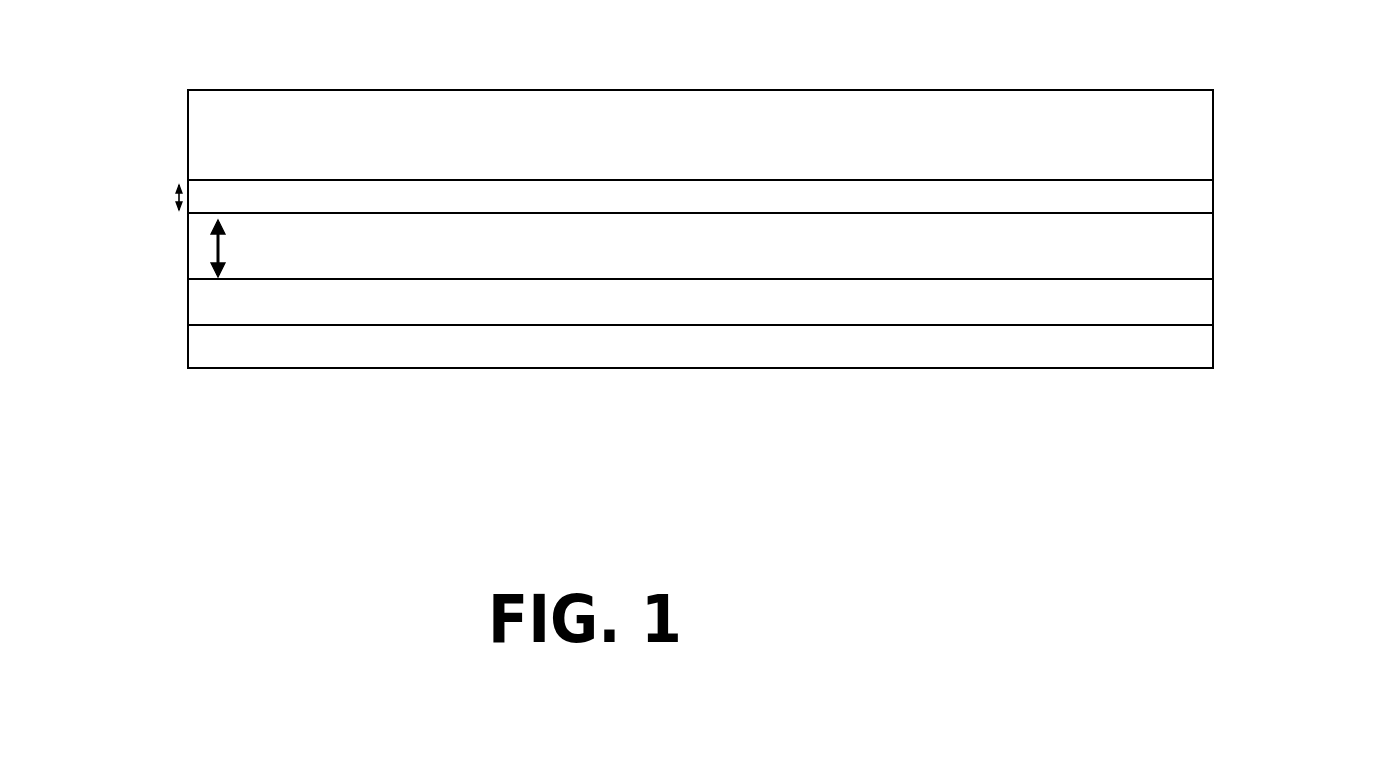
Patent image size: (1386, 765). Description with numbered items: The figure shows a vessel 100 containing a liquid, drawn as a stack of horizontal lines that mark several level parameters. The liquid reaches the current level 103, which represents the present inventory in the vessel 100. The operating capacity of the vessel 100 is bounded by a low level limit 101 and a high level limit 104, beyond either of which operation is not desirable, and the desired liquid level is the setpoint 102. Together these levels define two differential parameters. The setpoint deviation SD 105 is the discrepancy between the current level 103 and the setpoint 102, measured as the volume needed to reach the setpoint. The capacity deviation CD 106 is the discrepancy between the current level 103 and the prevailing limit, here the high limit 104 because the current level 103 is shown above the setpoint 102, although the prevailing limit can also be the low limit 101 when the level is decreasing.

The vessel 100 is at (372, 417).
The low level limit 101 is at (1214, 325).
The setpoint 102 is at (1214, 279).
The current level 103 is at (1214, 213).
The high level limit 104 is at (1213, 180).
The setpoint deviation (SD) 105 is at (213, 247).
The capacity deviation (CD) 106 is at (174, 197).